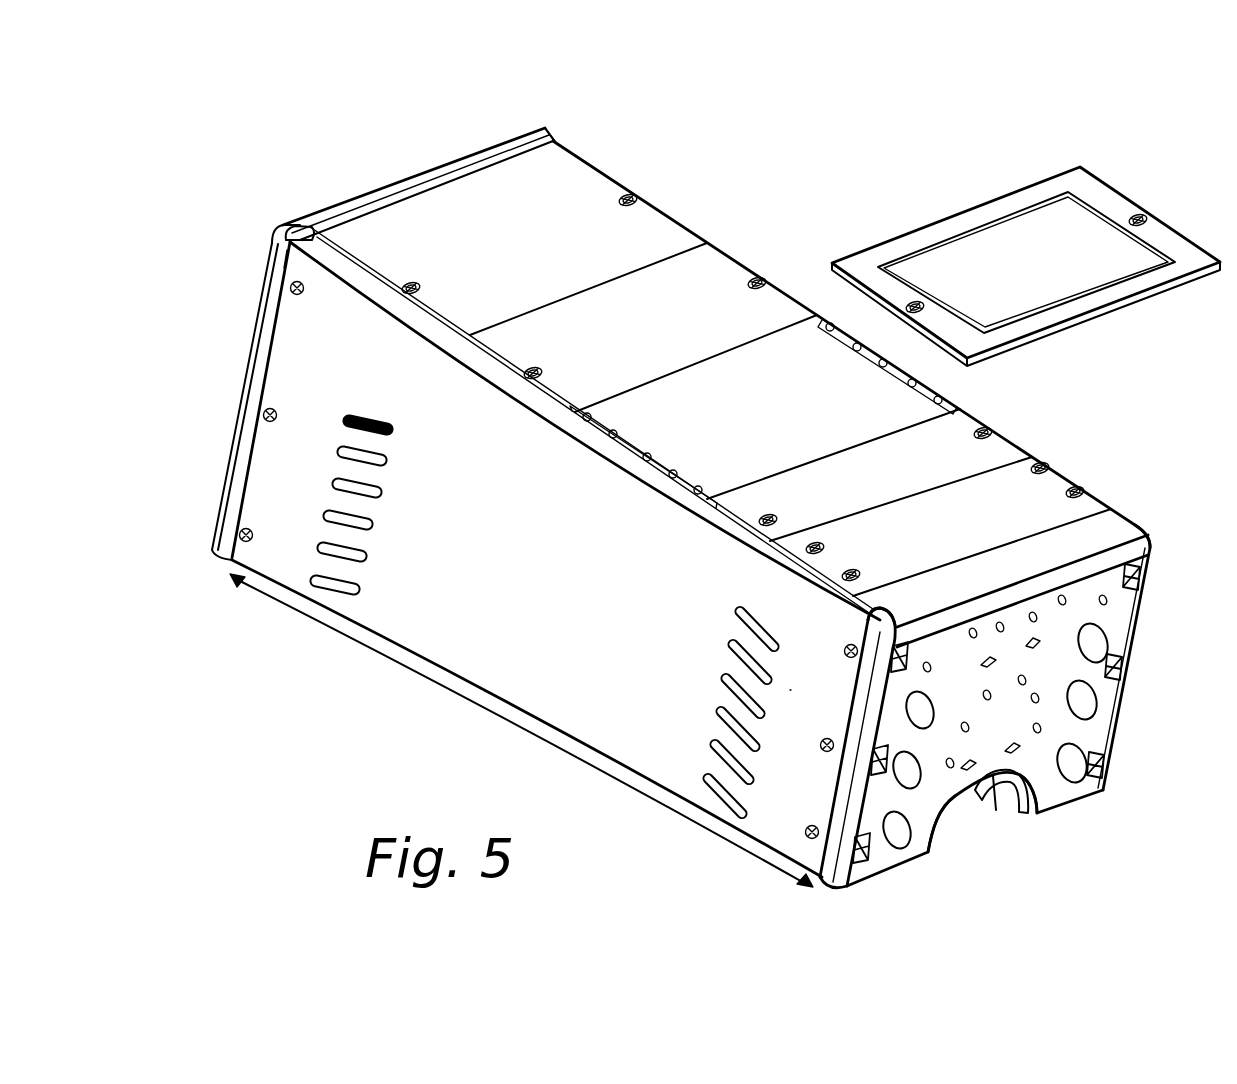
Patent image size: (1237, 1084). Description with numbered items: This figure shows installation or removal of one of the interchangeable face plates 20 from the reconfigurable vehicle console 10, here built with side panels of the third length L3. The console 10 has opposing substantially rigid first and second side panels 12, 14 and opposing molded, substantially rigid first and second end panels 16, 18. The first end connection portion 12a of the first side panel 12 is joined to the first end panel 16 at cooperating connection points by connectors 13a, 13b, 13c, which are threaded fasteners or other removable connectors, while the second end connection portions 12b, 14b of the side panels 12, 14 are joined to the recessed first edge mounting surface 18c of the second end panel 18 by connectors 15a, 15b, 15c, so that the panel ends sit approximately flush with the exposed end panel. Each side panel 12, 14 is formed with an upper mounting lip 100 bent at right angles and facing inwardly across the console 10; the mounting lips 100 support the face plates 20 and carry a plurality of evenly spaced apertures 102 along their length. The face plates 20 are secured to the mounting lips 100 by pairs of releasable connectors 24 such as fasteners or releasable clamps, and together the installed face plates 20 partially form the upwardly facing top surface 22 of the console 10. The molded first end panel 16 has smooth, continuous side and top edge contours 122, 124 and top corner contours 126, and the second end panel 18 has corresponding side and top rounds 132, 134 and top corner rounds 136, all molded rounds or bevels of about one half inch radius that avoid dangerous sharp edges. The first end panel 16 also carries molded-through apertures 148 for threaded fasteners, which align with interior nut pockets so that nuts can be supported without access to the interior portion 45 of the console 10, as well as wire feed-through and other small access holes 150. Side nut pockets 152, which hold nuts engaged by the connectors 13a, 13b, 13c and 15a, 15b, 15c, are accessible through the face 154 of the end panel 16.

The reconfigurable vehicle console 10 is at (297, 165).
The first side panel 12 is at (549, 608).
The first end connection portion 12a is at (816, 688).
The second end connection portion 12b is at (292, 268).
The connector 13a is at (844, 650).
The connector 13b is at (822, 742).
The connector 13c is at (807, 828).
The second side panel 14 is at (718, 468).
The second end connection portion 14b is at (566, 146).
The connector 15a is at (290, 288).
The connector 15b is at (263, 415).
The connector 15c is at (238, 523).
The first end panel 16 is at (1050, 810).
The second end panel 18 is at (238, 405).
The first recessed side edge mounting surface 18c is at (317, 223).
The face plate 20 is at (1098, 190).
The top surface 22 is at (810, 448).
The releasable connector 24 is at (638, 200).
The interior portion 45 is at (738, 423).
The upper mounting lip 100 is at (593, 447).
The aperture 102 is at (583, 422).
The side edge contour 122 is at (1113, 725).
The top edge contour 124 is at (1103, 566).
The top corner contour 126 is at (1150, 535).
The side edge round 132 is at (243, 373).
The top edge round 134 is at (453, 167).
The top corner round 136 is at (287, 230).
The molded-through aperture 148 is at (985, 695).
The access hole 150 is at (1080, 790).
The side nut pocket 152 is at (1142, 578).
The face 154 is at (927, 788).
The side panel length L3 is at (460, 700).